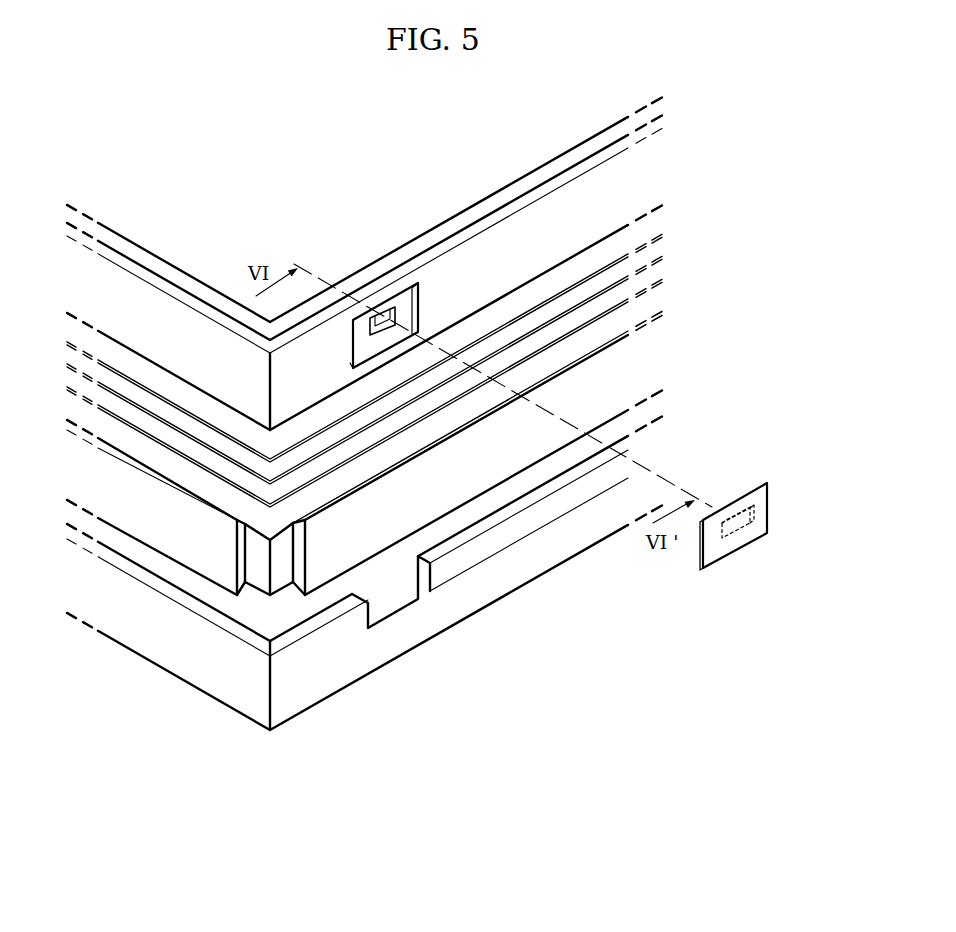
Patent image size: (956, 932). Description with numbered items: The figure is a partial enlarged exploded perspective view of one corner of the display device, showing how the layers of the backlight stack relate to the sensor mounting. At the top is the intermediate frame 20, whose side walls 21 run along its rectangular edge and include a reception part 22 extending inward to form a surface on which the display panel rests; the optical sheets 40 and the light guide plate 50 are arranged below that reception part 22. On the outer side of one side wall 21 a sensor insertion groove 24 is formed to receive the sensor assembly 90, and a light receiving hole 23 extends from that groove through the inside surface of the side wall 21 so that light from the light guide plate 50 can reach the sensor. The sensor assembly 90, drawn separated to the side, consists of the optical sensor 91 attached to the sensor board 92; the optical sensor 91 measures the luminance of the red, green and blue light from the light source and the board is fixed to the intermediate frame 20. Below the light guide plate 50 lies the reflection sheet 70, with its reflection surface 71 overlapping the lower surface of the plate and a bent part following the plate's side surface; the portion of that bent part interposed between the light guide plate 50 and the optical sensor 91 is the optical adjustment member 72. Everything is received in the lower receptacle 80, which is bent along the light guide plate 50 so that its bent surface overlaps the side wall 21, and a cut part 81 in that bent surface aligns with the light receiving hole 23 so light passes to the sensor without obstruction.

The intermediate frame 20 is at (422, 263).
The side walls 21 is at (583, 169).
The reception part 22 is at (583, 150).
The light receiving hole 23 is at (397, 313).
The sensor insertion groove 24 is at (412, 326).
The optical sheets 40 is at (58, 345).
The light guide plate 50 is at (258, 566).
The reflection sheet 70 is at (364, 556).
The reflection surface 71 is at (286, 587).
The optical adjustment member 72 is at (318, 558).
The lower receptacle 80 is at (364, 573).
The cut part 81 is at (382, 577).
The sensor assembly 90 is at (789, 524).
The optical sensor 91 is at (750, 512).
The sensor board 92 is at (762, 525).